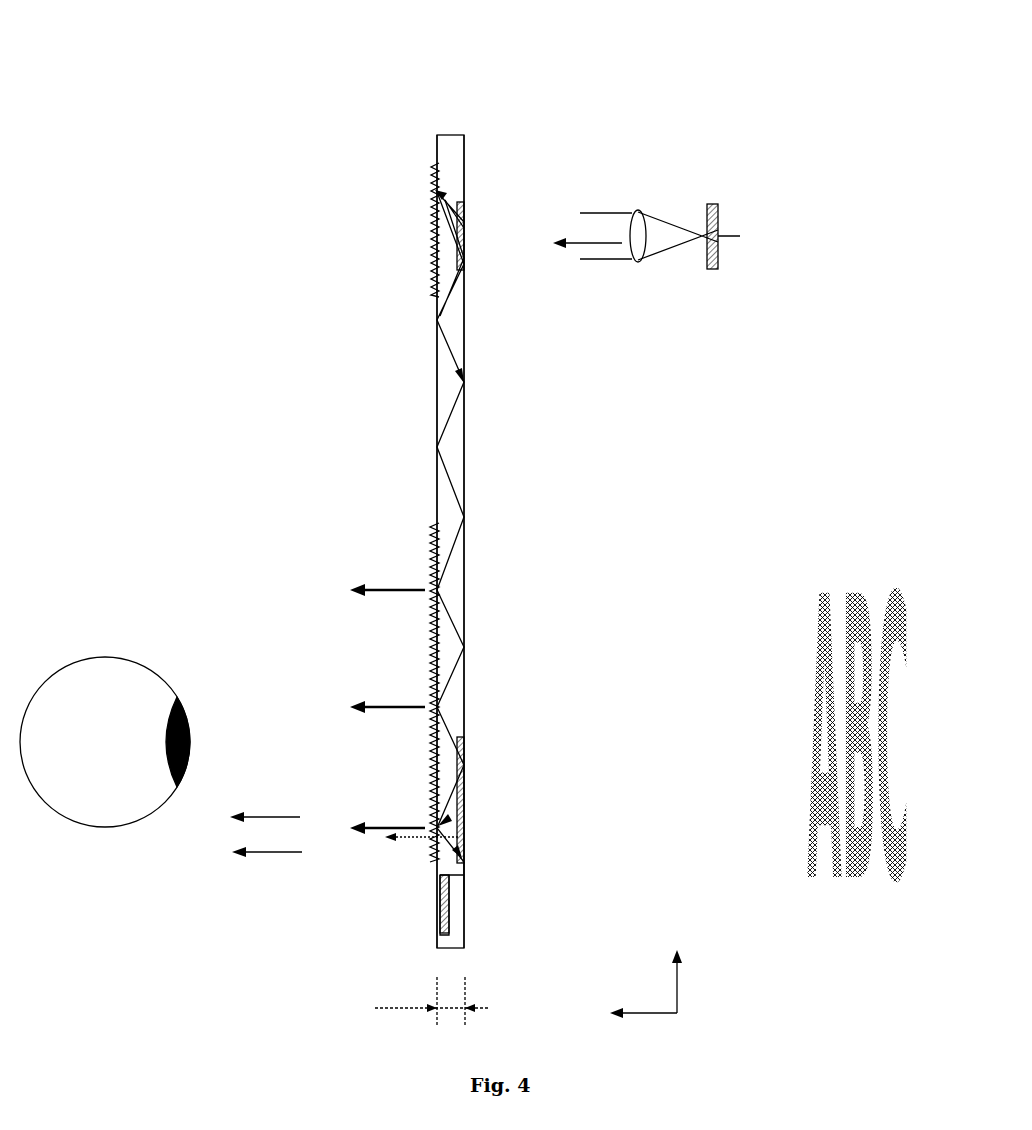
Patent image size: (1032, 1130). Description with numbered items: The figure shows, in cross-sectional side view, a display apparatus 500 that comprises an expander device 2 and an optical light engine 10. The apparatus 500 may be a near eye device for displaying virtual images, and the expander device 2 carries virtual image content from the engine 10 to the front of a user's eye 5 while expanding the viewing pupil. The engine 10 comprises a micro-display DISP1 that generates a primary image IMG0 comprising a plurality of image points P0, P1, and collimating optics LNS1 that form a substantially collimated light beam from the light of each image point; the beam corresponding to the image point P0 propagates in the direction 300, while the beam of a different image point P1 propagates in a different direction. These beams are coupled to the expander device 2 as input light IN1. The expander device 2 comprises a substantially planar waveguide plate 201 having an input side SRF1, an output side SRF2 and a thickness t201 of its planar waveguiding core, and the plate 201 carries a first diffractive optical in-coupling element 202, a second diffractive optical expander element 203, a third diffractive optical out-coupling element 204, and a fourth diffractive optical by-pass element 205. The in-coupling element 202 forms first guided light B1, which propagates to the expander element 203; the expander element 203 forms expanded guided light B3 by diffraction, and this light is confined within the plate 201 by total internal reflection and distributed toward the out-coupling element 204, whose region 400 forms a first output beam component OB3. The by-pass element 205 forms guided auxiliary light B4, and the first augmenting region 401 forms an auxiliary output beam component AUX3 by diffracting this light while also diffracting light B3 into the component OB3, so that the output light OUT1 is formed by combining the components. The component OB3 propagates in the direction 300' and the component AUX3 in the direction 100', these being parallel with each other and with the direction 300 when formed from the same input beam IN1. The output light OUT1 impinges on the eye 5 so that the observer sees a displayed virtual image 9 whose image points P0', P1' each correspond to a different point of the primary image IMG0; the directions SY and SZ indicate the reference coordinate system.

The display apparatus 500 is at (372, 48).
The expander device 2 is at (410, 123).
The optical light engine 10 is at (745, 126).
The waveguide plate 201 is at (437, 405).
The first diffractive optical in-coupling element 202 is at (464, 222).
The second diffractive optical expander element 203 is at (422, 163).
The third diffractive optical out-coupling element 204 is at (572, 523).
The fourth diffractive optical by-pass element 205 is at (437, 893).
The region of the out-coupling element 400 is at (473, 522).
The first augmenting region 401 is at (473, 736).
The input side SRF1 is at (437, 447).
The output side SRF2 is at (437, 490).
The first guided light B1 is at (463, 195).
The expanded guided light B3 is at (437, 362).
The guided auxiliary light B4 is at (465, 881).
The first output beam component OB3 is at (413, 822).
The auxiliary output beam component AUX3 is at (403, 840).
The collimating optics LNS1 is at (640, 207).
The micro-display DISP1 is at (714, 204).
The primary image IMG0 is at (718, 262).
The image point P0 is at (766, 255).
The image point P1 is at (758, 274).
The input light beams IN1 is at (551, 215).
The direction 300 is at (587, 235).
The output light OUT1 is at (338, 570).
The direction 300' is at (265, 807).
The direction 100' is at (267, 842).
The eye 5 is at (105, 657).
The displayed virtual image 9 is at (930, 568).
The image point of the displayed virtual image P0' is at (770, 748).
The image point of the displayed virtual image P1' is at (777, 809).
The direction SY is at (677, 970).
The direction SZ is at (626, 1019).
The thickness of the waveguiding plate t201 is at (432, 1001).